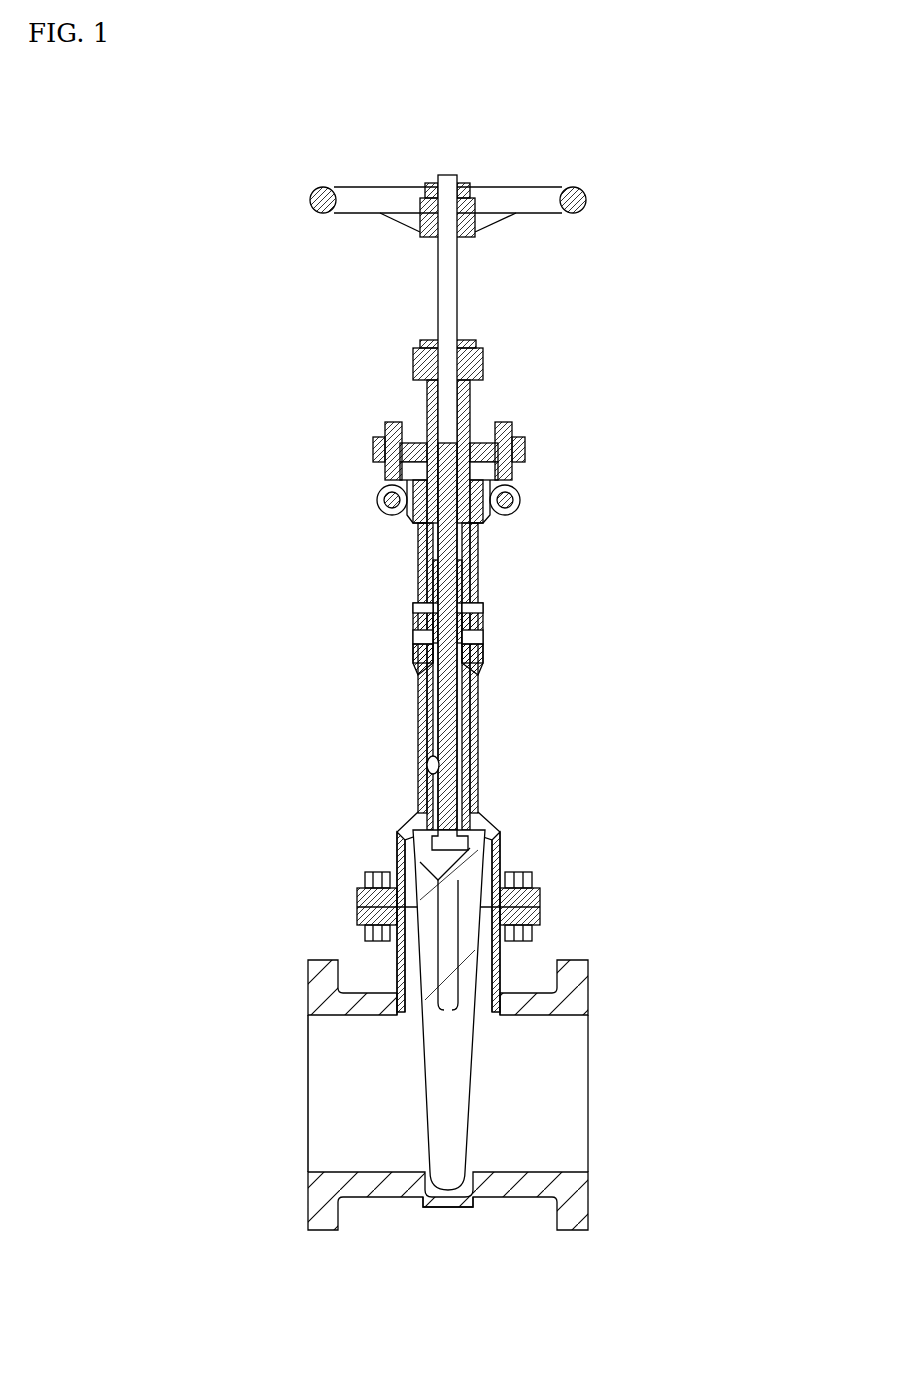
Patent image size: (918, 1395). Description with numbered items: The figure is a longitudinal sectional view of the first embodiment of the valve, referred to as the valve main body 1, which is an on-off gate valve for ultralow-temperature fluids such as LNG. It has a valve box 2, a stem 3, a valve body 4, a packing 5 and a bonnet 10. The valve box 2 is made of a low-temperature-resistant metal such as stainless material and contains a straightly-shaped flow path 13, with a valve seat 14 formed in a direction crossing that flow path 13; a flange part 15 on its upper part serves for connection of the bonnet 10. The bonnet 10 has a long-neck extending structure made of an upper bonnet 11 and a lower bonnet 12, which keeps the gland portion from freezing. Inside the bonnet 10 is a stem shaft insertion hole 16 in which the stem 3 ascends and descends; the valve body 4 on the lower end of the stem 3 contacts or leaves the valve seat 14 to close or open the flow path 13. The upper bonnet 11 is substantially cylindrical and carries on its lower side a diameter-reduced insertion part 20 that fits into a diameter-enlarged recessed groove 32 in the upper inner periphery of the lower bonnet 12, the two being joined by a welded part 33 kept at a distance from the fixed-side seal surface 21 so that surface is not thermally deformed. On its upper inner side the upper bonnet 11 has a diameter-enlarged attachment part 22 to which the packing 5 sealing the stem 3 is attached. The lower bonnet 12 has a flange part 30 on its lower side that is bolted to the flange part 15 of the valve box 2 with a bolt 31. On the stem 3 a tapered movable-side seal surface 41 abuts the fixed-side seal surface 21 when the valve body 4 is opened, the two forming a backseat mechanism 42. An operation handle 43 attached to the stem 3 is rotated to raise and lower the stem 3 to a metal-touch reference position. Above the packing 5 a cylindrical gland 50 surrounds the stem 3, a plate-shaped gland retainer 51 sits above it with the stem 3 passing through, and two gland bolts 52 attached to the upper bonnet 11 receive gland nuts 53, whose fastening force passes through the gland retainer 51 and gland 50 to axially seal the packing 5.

The valve main body 1 is at (505, 752).
The valve box 2 is at (325, 975).
The stem 3 is at (440, 572).
The valve body 4 is at (450, 913).
The packing 5 is at (415, 525).
The bonnet 10 is at (528, 676).
The upper bonnet 11 is at (477, 563).
The lower bonnet 12 is at (480, 693).
The flow path 13 is at (545, 1018).
The valve seat 14 is at (466, 1205).
The flange part 15 is at (365, 912).
The stem shaft insertion hole 16 is at (427, 768).
The insertion part 20 is at (437, 615).
The fixed-side seal surface 21 is at (460, 638).
The attachment part 22 is at (460, 525).
The flange part 30 is at (527, 897).
The bolt 31 is at (370, 872).
The diameter-enlarged recessed groove 32 is at (443, 575).
The welded part 33 is at (423, 603).
The movable-side seal surface 41 is at (413, 643).
The backseat mechanism 42 is at (417, 660).
The operation handle 43 is at (525, 190).
The gland 50 is at (470, 470).
The gland retainer 51 is at (420, 443).
The gland bolt 52 is at (385, 470).
The gland nut 53 is at (525, 445).